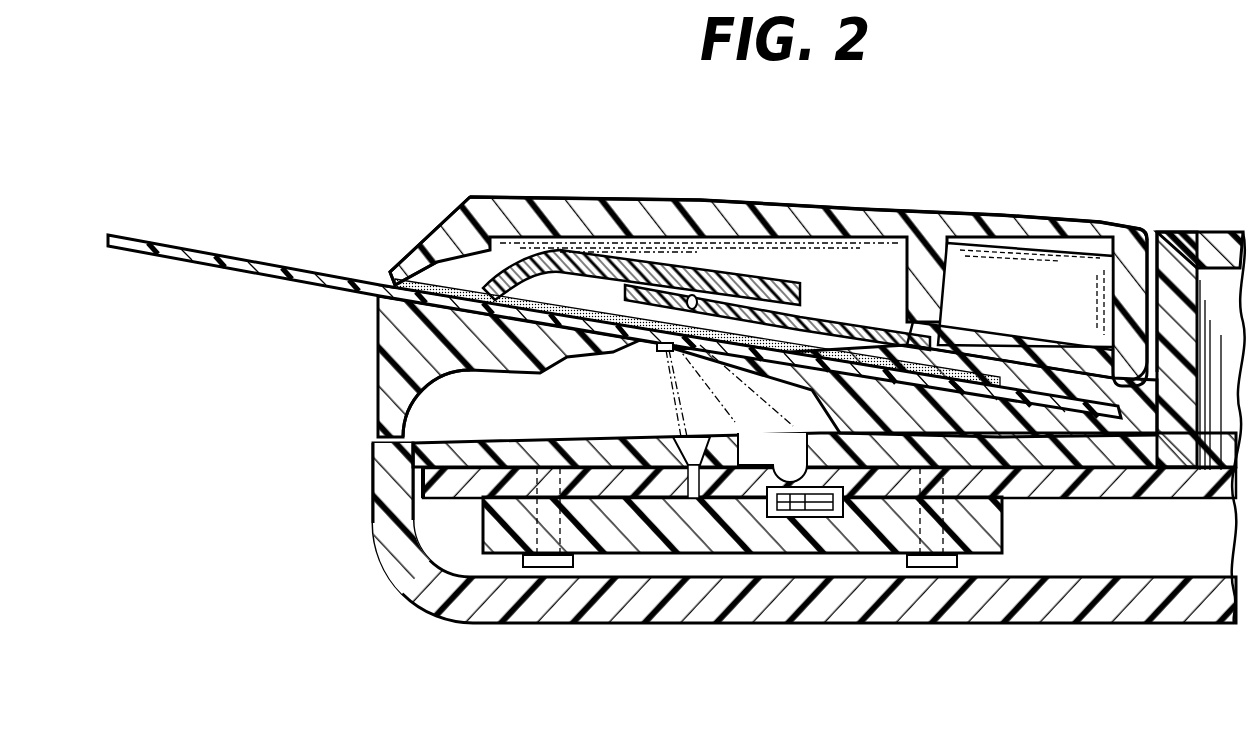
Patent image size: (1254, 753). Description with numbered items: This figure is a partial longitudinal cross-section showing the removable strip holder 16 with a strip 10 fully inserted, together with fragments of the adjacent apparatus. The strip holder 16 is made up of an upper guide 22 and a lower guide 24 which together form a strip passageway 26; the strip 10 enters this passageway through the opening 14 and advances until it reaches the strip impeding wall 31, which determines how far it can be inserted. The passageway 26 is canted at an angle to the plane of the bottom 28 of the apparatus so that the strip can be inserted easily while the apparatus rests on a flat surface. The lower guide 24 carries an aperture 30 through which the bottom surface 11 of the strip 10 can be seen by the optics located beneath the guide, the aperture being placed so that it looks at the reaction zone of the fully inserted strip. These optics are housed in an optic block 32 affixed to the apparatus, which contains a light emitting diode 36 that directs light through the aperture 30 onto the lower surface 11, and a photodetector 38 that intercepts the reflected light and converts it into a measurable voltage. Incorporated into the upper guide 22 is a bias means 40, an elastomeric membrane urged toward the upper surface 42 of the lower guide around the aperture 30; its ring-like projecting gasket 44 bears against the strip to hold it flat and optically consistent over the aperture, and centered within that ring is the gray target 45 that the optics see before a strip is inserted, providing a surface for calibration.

The strip 10 is at (614, 282).
The bottom surface of the strip 11 is at (672, 352).
The opening 14 is at (382, 300).
The strip holder 16 is at (822, 204).
The upper guide 22 is at (740, 253).
The lower guide 24 is at (715, 368).
The strip passageway 26 is at (392, 276).
The bottom of the apparatus 28 is at (943, 625).
The aperture 30 is at (657, 347).
The strip impeding wall 31 is at (1057, 362).
The optic block 32 is at (443, 440).
The light emitting diode 36 is at (688, 478).
The photodetector 38 is at (803, 518).
The bias means 40 is at (750, 307).
The upper surface of the lower guide 42 is at (537, 313).
The ring-like projecting gasket 44 is at (630, 305).
The gray target 45 is at (692, 296).